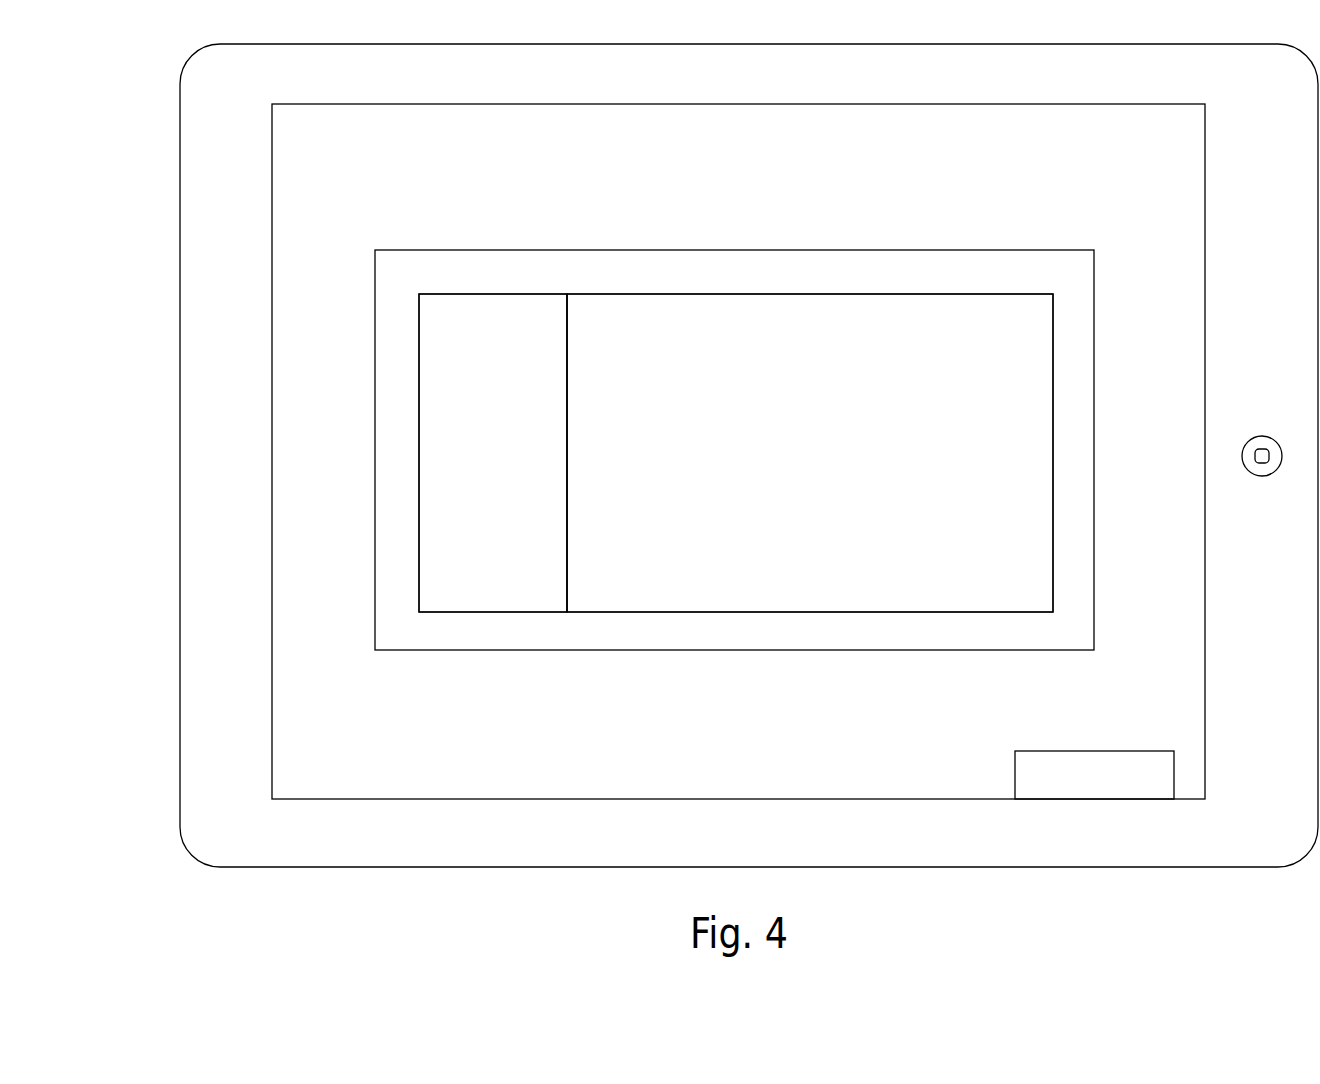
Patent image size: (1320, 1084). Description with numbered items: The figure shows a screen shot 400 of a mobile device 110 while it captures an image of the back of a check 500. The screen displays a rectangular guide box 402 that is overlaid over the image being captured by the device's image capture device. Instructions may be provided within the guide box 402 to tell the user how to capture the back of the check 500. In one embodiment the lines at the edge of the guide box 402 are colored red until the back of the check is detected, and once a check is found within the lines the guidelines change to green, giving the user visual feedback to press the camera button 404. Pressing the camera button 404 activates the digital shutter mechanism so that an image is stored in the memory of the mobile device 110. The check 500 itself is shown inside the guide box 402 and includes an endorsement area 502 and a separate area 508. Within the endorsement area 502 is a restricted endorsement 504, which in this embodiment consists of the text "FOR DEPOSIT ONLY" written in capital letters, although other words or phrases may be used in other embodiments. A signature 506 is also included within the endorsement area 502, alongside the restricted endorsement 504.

The screen shot 400 is at (118, 122).
The mobile device 110 is at (712, 455).
The guide box 402 is at (1046, 249).
The camera button 404 is at (1023, 771).
The check 500 is at (697, 294).
The endorsement area 502 is at (473, 318).
The restricted endorsement 504 is at (448, 583).
The signature 506 is at (537, 515).
The area 508 is at (750, 580).